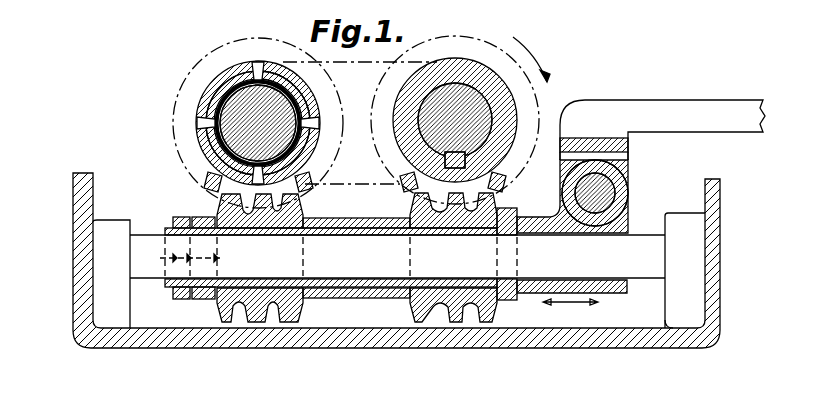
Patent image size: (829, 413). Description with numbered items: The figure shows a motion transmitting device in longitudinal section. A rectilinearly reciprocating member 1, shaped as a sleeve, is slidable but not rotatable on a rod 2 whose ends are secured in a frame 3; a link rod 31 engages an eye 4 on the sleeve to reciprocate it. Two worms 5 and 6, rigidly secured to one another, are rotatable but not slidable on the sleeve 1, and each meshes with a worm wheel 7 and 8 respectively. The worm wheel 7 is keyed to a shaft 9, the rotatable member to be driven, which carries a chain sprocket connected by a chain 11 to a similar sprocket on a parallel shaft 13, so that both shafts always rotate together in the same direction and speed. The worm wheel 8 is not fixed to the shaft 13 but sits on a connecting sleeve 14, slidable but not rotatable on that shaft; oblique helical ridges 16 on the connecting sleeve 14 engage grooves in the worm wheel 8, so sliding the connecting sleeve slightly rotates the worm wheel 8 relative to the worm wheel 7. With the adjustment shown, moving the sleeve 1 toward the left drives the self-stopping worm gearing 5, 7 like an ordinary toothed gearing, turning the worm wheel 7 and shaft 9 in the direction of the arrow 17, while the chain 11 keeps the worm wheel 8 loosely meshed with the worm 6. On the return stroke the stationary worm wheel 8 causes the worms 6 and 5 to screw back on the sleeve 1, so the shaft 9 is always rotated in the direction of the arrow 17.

The rectilinearly reciprocating member 1 is at (535, 293).
The rod 2 is at (650, 278).
The frame 3 is at (170, 340).
The eye 4 is at (622, 187).
The worm 5 is at (441, 323).
The worm 6 is at (270, 320).
The worm wheel 7 is at (517, 172).
The worm wheel 8 is at (212, 182).
The shaft 9 is at (477, 120).
The chain 11 is at (366, 64).
The shaft 13 is at (240, 107).
The connecting sleeve 14 is at (312, 148).
The helical ridges 16 is at (197, 125).
The arrow 17 is at (537, 60).
The arm 31 is at (690, 113).